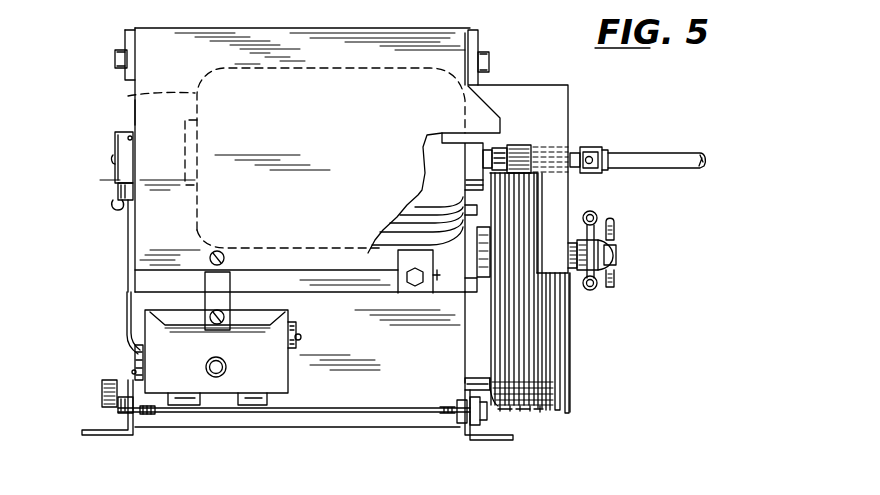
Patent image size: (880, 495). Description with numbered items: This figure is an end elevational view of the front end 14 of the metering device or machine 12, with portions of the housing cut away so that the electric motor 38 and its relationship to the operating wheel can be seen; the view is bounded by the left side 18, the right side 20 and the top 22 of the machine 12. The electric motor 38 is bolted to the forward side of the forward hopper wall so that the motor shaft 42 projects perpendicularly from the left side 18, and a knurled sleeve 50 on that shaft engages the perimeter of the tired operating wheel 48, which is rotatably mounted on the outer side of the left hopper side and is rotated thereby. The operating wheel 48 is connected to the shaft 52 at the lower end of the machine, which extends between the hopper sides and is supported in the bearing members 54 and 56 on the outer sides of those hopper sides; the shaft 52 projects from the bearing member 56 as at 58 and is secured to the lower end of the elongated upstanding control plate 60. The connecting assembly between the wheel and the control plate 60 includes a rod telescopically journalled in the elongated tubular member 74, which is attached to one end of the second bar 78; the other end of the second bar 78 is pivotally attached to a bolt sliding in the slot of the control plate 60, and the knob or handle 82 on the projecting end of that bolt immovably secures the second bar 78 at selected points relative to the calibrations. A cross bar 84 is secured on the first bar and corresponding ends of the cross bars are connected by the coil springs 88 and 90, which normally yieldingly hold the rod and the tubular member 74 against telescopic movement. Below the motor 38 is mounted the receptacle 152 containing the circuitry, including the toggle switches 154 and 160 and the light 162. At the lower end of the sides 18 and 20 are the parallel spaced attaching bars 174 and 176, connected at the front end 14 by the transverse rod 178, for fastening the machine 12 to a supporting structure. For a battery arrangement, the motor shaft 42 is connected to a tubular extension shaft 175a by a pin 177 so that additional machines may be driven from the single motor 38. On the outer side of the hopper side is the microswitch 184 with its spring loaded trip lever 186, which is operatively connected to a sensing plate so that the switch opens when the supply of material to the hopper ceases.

The metering device or machine 12 is at (508, 60).
The front end 14 is at (383, 388).
The left side 18 is at (578, 351).
The right side 20 is at (128, 114).
The top 22 is at (305, 28).
The electric motor 38 is at (126, 96).
The motor shaft 42 is at (577, 151).
The tired operating wheel 48 is at (553, 338).
The knurled sleeve 50 is at (532, 176).
The shaft 52 is at (568, 393).
The bearing member 54 is at (100, 396).
The bearing member 56 is at (468, 378).
The projecting end of shaft 58 is at (551, 413).
The control plate 60 is at (565, 376).
The tubular member 74 is at (617, 256).
The second bar 78 is at (588, 238).
The knob or handle 82 is at (614, 224).
The cross bar 84 is at (616, 234).
The coil spring 88 is at (598, 214).
The coil spring 90 is at (598, 288).
The receptacle 152 is at (276, 396).
The toggle switch 154 is at (136, 371).
The toggle switch 160 is at (297, 333).
The light 162 is at (210, 378).
The attaching bar 174 is at (480, 438).
The tubular extension shaft 175a is at (686, 152).
The attaching bar 176 is at (93, 437).
The pin 177 is at (590, 156).
The transverse rod 178 is at (328, 418).
The microswitch 184 is at (115, 142).
The spring loaded trip lever 186 is at (118, 192).